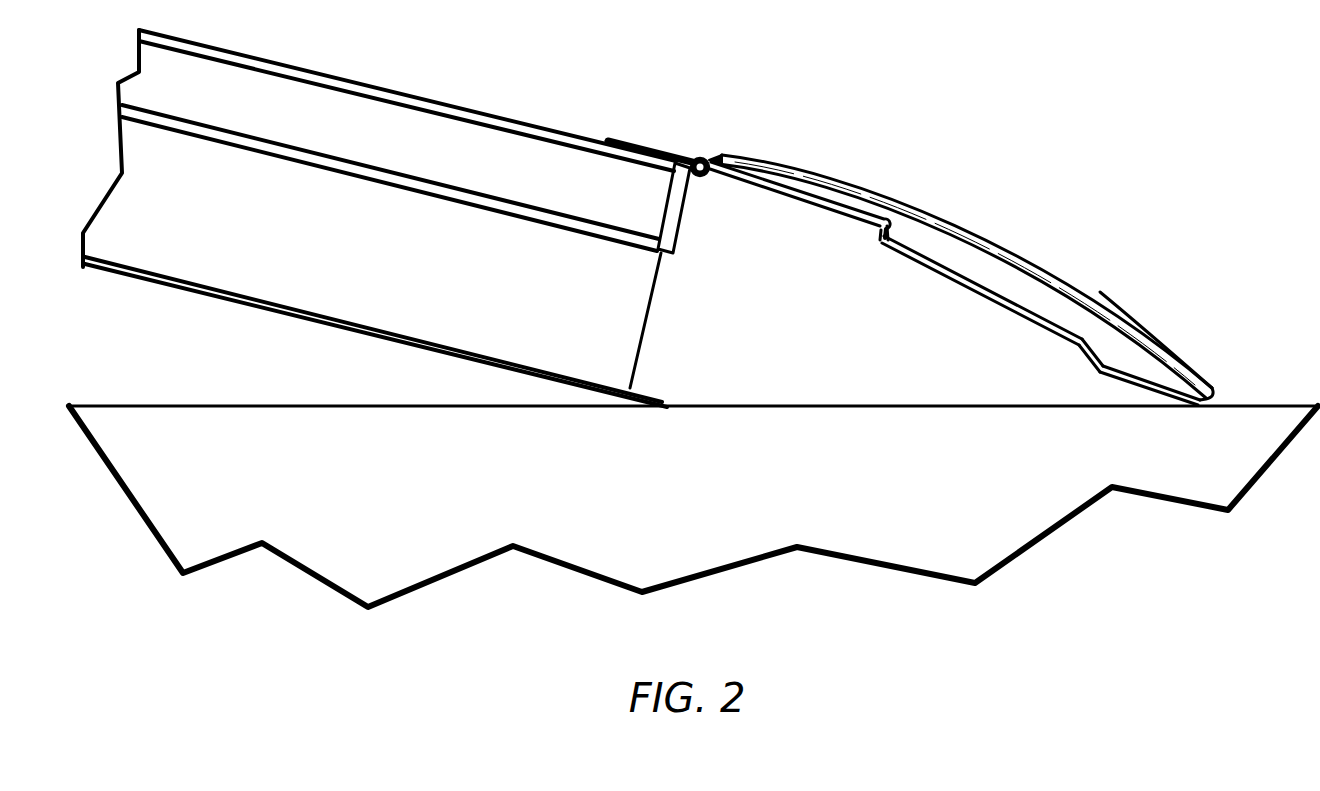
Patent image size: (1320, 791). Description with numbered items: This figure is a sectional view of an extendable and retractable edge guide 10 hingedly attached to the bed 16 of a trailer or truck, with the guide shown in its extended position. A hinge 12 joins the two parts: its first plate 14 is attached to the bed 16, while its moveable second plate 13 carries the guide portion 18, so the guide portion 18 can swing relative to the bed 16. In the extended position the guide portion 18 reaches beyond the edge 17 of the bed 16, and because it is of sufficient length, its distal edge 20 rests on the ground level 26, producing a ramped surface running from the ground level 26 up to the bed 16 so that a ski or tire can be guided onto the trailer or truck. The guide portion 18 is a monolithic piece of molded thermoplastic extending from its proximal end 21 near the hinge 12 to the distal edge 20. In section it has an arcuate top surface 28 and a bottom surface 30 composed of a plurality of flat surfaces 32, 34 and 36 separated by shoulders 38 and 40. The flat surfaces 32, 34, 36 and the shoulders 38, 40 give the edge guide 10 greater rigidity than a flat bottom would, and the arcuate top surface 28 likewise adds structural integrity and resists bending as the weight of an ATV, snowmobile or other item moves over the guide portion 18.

The edge guide 10 is at (1066, 128).
The hinge 12 is at (703, 156).
The second plate 13 is at (762, 198).
The first plate 14 is at (642, 148).
The bed 16 is at (527, 157).
The edge 17 is at (675, 210).
The guide portion 18 is at (902, 188).
The distal edge 20 is at (1215, 399).
The proximal end 21 is at (722, 158).
The ground level 26 is at (1010, 405).
The arcuate top surface 28 is at (1109, 300).
The bottom surface 30 is at (973, 297).
The flat surface 32 is at (878, 228).
The flat surface 34 is at (888, 247).
The flat surface 36 is at (1123, 382).
The shoulder 38 is at (878, 235).
The shoulder 40 is at (1080, 350).